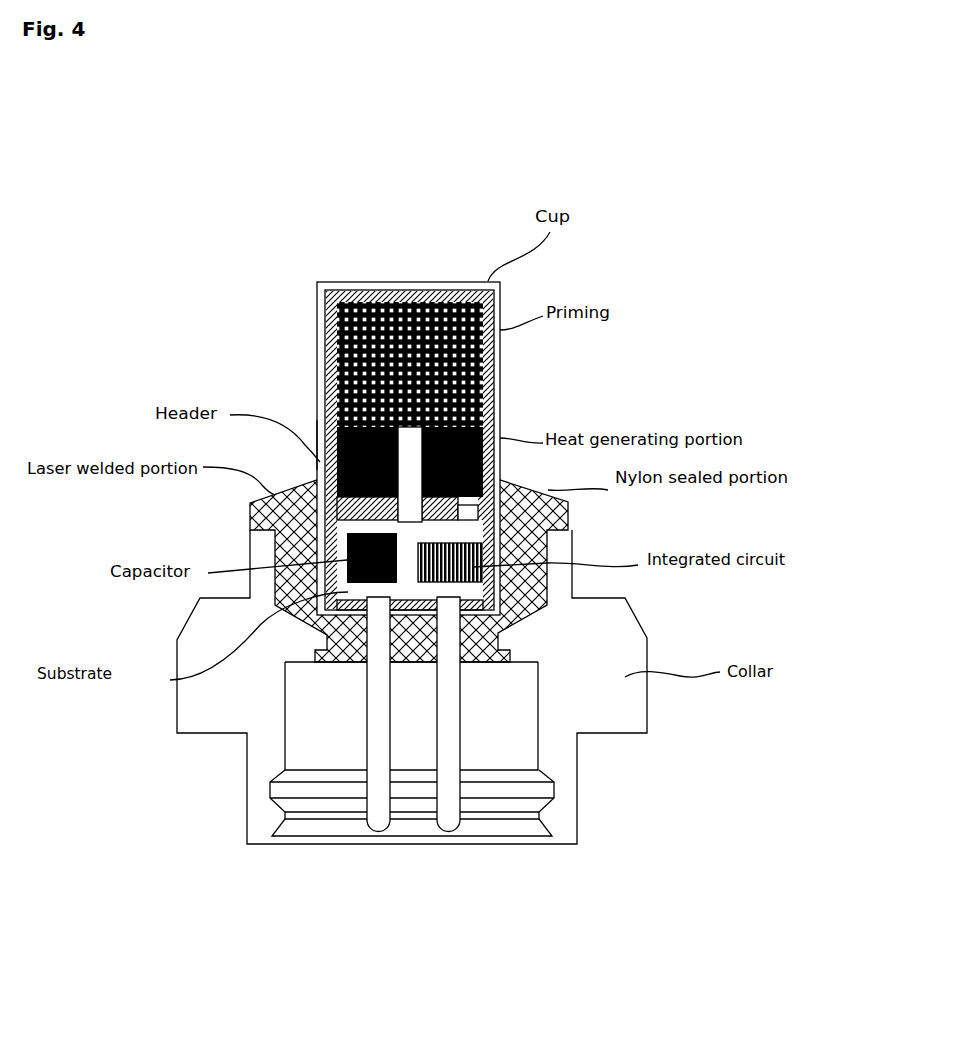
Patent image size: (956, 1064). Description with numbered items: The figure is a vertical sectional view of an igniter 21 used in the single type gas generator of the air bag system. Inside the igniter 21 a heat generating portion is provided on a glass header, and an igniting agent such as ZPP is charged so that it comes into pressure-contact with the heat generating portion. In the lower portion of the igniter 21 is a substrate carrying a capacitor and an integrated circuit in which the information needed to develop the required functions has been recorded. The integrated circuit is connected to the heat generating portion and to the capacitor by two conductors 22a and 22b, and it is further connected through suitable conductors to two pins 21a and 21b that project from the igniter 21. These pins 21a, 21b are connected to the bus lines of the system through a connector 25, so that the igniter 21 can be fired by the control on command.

The igniter 21 is at (365, 270).
The pin 21a is at (375, 829).
The pin 21b is at (449, 829).
The conductor 22a is at (320, 435).
The conductor 22b is at (475, 512).
The connector 25 is at (517, 745).